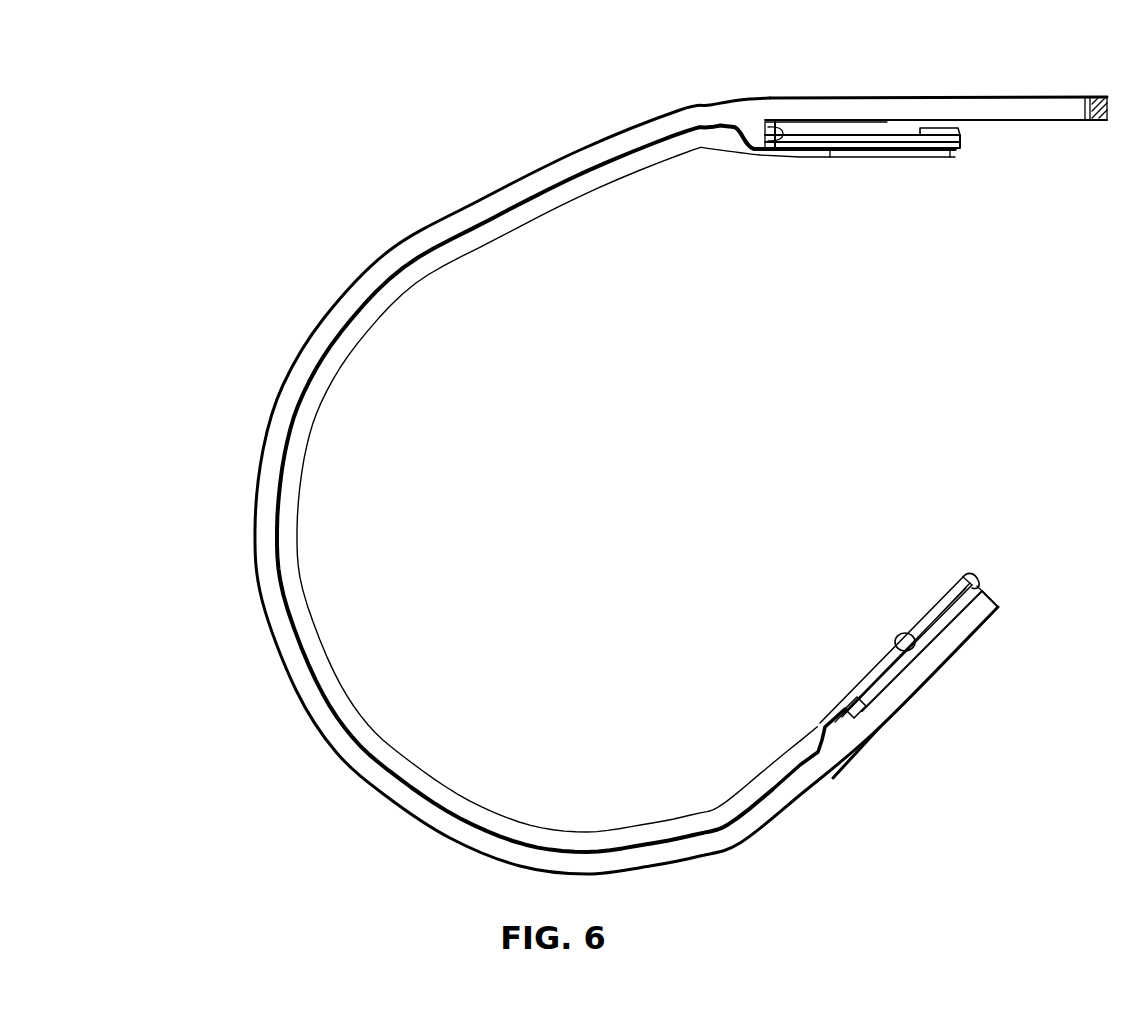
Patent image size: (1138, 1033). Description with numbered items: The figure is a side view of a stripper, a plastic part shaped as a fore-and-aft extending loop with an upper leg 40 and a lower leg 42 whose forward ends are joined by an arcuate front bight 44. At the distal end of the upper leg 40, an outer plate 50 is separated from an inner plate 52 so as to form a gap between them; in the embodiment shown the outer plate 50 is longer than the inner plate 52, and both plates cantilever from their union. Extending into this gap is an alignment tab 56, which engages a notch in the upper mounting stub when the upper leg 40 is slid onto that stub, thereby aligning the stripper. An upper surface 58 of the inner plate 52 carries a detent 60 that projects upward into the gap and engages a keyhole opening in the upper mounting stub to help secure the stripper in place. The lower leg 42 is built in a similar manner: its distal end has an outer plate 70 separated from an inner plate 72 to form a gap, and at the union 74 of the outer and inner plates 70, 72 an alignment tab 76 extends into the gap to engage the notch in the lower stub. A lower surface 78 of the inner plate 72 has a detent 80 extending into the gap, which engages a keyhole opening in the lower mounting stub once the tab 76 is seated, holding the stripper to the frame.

The upper leg 40 is at (727, 97).
The lower leg 42 is at (777, 775).
The arcuate front bight 44 is at (251, 512).
The outer plate 50 is at (980, 96).
The inner plate 52 is at (892, 160).
The alignment tab 56 is at (775, 122).
The upper surface 58 is at (865, 127).
The detent 60 is at (960, 128).
The outer plate 70 is at (972, 632).
The inner plate 72 is at (923, 605).
The union 74 is at (850, 742).
The alignment tab 76 is at (863, 698).
The lower surface 78 is at (893, 627).
The detent 80 is at (972, 587).